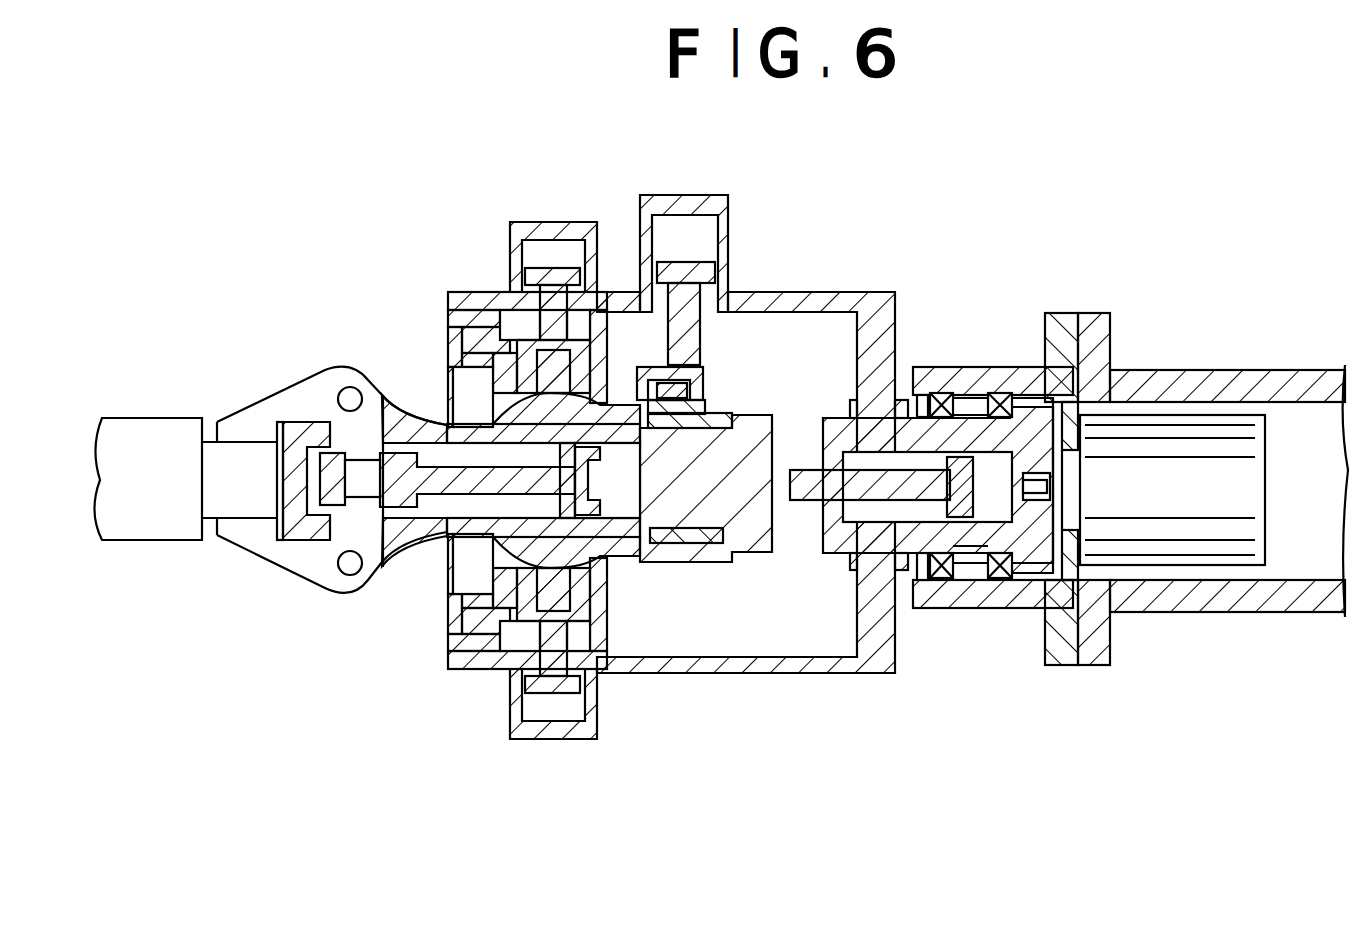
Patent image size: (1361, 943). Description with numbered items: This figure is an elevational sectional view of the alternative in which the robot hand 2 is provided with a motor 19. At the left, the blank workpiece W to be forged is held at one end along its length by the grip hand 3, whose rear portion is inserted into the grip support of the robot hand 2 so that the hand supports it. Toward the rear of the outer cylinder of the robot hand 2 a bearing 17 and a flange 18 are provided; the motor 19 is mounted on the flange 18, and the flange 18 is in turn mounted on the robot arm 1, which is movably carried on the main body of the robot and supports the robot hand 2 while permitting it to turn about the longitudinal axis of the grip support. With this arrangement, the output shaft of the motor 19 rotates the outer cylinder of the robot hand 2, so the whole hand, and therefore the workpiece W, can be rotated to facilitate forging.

The robot arm 1 is at (1100, 628).
The robot hand 2 is at (835, 292).
The grip hand 3 is at (318, 397).
The bearing 17 is at (1000, 393).
The flange 18 is at (1062, 318).
The motor 19 is at (1185, 452).
The blank workpiece W is at (150, 440).